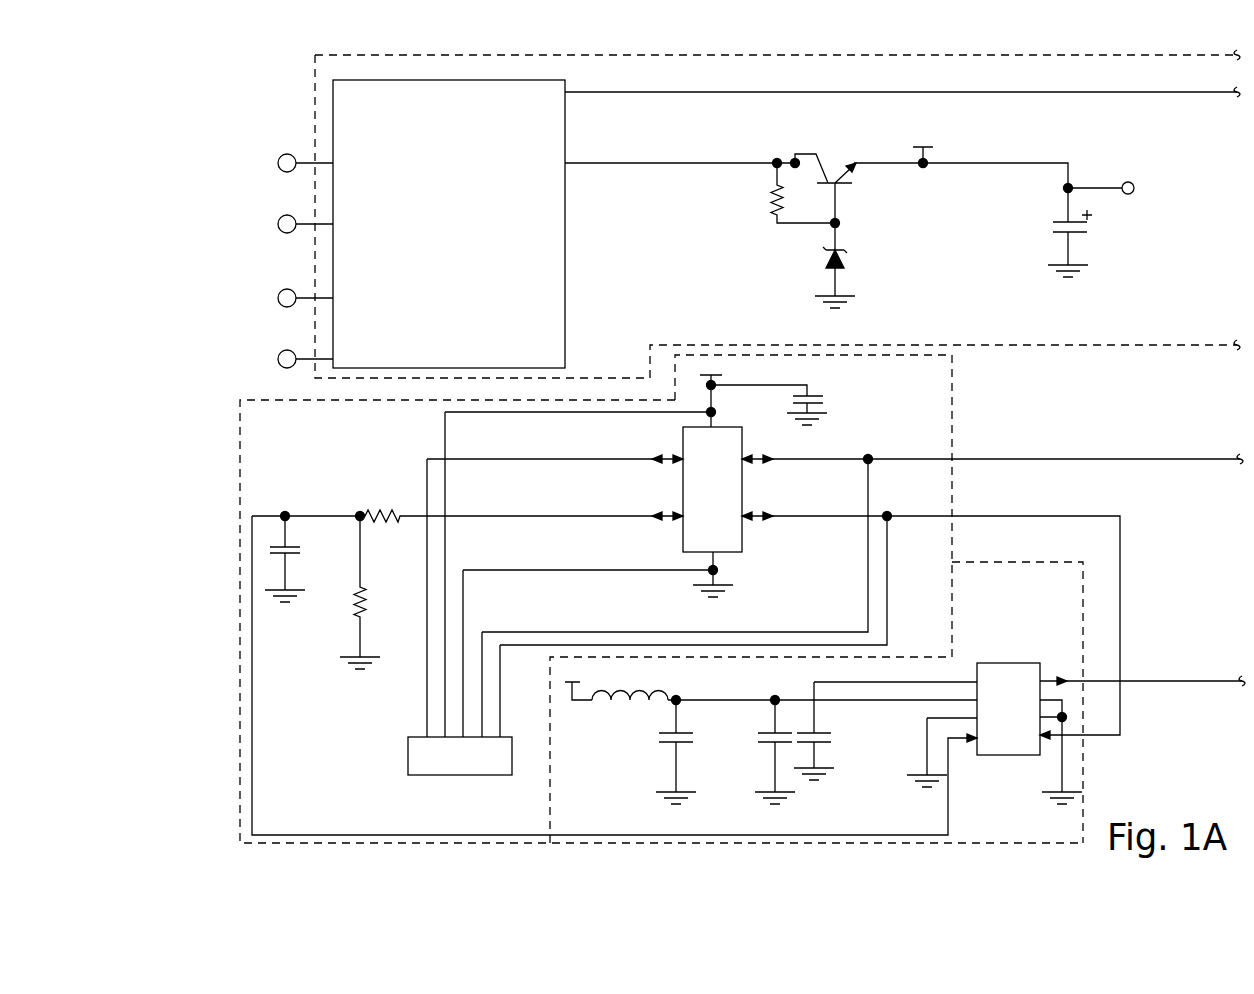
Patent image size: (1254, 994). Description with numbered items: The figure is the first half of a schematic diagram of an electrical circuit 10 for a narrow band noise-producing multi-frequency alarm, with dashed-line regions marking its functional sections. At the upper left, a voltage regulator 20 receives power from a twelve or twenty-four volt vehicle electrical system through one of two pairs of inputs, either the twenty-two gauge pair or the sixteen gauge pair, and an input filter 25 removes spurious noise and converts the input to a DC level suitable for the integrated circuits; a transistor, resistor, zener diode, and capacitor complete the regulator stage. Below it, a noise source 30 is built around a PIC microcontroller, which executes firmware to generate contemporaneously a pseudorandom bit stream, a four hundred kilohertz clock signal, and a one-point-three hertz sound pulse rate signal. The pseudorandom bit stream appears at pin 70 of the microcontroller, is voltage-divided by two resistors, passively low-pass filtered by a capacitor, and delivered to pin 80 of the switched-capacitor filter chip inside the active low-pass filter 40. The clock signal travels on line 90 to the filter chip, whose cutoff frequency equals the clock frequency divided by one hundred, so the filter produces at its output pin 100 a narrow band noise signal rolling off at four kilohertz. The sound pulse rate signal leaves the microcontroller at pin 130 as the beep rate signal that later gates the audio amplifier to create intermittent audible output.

The electrical circuit 10 is at (296, 82).
The voltage regulator 20 is at (312, 118).
The input filter 25 is at (565, 229).
The noise source 30 is at (240, 460).
The active low-pass filter 40 is at (1083, 773).
The pin of microcontroller U1 70 is at (683, 512).
The pin on filter U2 80 is at (977, 738).
The line 90 is at (1120, 537).
The output pin of filter U2 100 is at (1042, 678).
The pin of microcontroller U1 130 is at (743, 459).